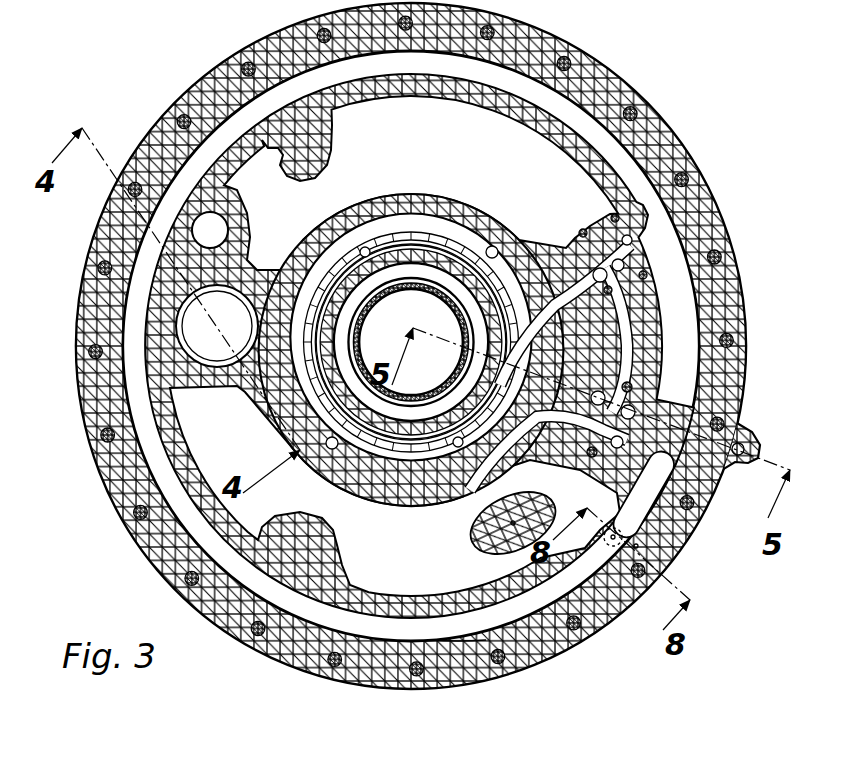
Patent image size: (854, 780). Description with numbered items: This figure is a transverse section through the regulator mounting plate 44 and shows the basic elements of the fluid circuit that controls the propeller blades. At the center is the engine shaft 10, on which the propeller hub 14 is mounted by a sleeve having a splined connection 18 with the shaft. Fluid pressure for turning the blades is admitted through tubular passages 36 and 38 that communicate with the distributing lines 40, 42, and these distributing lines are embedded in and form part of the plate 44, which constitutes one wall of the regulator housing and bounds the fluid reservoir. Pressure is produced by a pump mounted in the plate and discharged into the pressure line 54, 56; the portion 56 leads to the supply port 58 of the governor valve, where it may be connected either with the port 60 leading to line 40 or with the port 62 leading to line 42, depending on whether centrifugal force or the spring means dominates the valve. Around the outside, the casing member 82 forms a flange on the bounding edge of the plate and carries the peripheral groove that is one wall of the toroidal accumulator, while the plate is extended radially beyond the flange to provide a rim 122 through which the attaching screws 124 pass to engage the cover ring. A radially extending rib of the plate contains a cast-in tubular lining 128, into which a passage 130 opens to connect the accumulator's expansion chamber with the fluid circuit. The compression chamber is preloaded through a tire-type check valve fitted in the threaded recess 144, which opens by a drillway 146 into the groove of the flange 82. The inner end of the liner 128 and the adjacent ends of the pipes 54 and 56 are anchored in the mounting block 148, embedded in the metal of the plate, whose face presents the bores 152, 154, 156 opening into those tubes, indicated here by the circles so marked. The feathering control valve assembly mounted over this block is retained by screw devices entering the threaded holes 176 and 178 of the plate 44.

The engine shaft 10 is at (463, 372).
The propeller hub 14 is at (375, 279).
The splined connection 18 is at (421, 286).
The tubular passage 36 is at (494, 246).
The tubular passage 38 is at (365, 247).
The distributing line 40 is at (349, 222).
The distributing line 42 is at (330, 249).
The plate 44 is at (495, 97).
The pressure line 54 is at (391, 499).
The pressure line portion 56 is at (633, 313).
The supply port 58 is at (624, 264).
The port 60 is at (631, 236).
The port 62 is at (585, 288).
The casing member 82 is at (457, 642).
The rim 122 is at (652, 122).
The attaching screws 124 is at (183, 113).
The tubular lining 128 is at (666, 440).
The passage 130 is at (744, 444).
The threaded recess 144 is at (640, 547).
The drillway 146 is at (620, 537).
The mounting block 148 is at (616, 470).
The bore 152 is at (615, 449).
The bore 154 is at (629, 383).
The bore 156 is at (635, 411).
The threaded hole 176 is at (606, 398).
The threaded hole 178 is at (589, 456).